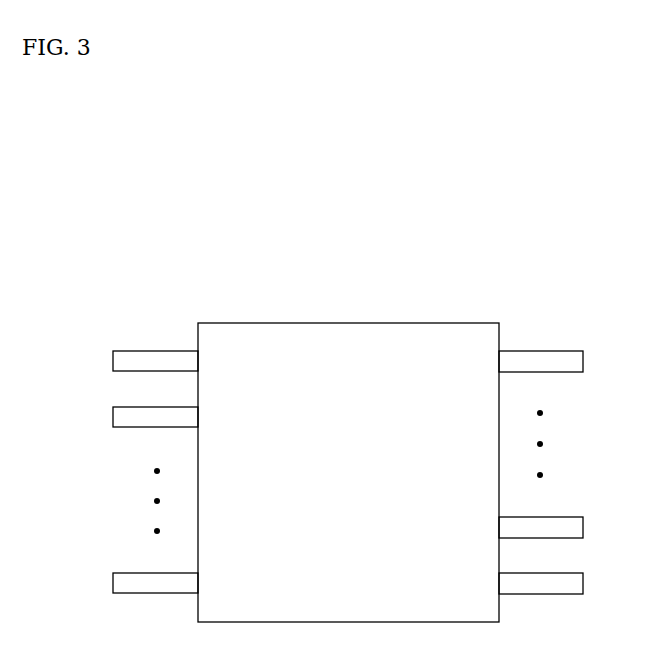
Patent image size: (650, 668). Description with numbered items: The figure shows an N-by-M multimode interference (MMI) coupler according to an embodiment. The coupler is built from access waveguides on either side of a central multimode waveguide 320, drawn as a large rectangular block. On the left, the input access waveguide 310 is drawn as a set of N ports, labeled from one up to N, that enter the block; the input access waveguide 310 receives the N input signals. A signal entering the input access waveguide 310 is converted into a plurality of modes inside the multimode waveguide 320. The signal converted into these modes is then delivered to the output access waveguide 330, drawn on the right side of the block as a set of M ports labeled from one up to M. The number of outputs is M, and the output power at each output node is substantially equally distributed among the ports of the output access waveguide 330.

The input access waveguide 310 is at (198, 272).
The multimode waveguide 320 is at (499, 262).
The output access waveguide 330 is at (583, 272).